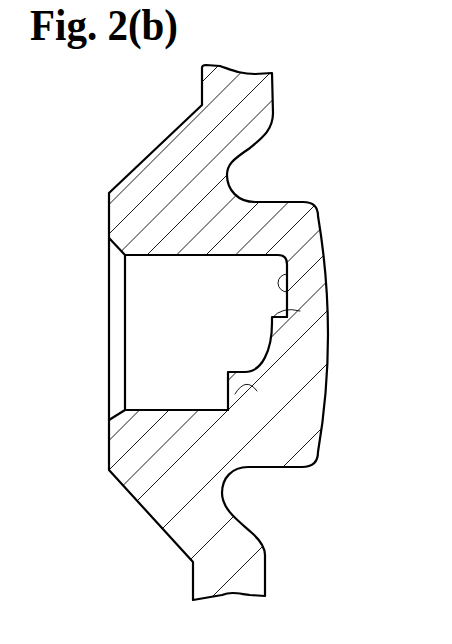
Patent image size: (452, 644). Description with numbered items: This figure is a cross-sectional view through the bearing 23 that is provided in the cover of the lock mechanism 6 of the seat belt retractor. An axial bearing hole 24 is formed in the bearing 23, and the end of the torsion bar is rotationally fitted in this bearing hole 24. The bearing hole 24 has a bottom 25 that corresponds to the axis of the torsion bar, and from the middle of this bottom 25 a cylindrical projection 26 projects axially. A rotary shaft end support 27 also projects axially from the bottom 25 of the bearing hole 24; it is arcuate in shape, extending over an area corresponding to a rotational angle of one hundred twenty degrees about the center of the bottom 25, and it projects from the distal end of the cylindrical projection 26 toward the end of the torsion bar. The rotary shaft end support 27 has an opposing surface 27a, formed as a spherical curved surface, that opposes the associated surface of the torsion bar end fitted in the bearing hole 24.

The lock mechanism 6 is at (226, 322).
The bearing 23 is at (288, 228).
The bearing hole 24 is at (166, 257).
The bottom 25 is at (289, 270).
The cylindrical projection 26 is at (300, 311).
The rotary shaft end support 27 is at (272, 372).
The opposing surface 27a is at (250, 388).